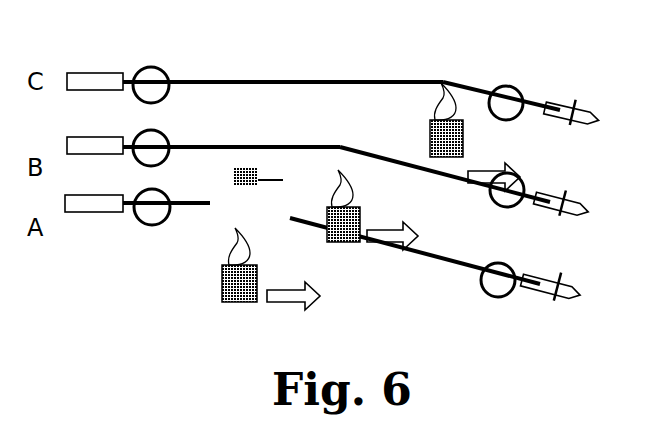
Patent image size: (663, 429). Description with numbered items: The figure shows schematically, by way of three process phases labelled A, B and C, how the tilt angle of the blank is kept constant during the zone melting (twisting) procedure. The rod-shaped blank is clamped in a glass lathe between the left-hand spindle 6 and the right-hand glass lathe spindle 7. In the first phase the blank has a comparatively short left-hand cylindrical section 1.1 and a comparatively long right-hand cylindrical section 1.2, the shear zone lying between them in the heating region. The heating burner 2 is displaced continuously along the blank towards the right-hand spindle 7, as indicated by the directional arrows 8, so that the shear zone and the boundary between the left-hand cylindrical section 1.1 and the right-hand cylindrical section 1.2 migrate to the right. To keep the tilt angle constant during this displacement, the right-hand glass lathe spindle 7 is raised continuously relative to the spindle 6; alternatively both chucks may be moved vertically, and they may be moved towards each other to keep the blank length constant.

The glass lathe spindle 6 is at (97, 85).
The left-hand cylindrical section 1.1 is at (258, 80).
The right-hand cylindrical section 1.2 is at (476, 88).
The heating burner 2 is at (430, 153).
The right-hand glass lathe spindle 7 is at (577, 110).
The directional arrows 8 is at (508, 172).